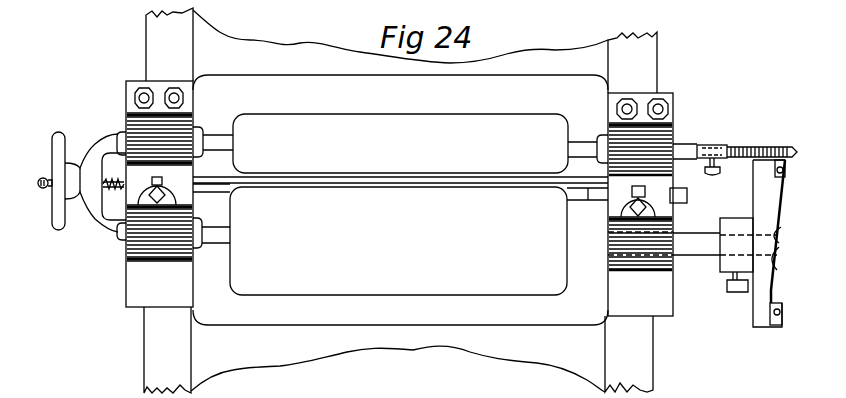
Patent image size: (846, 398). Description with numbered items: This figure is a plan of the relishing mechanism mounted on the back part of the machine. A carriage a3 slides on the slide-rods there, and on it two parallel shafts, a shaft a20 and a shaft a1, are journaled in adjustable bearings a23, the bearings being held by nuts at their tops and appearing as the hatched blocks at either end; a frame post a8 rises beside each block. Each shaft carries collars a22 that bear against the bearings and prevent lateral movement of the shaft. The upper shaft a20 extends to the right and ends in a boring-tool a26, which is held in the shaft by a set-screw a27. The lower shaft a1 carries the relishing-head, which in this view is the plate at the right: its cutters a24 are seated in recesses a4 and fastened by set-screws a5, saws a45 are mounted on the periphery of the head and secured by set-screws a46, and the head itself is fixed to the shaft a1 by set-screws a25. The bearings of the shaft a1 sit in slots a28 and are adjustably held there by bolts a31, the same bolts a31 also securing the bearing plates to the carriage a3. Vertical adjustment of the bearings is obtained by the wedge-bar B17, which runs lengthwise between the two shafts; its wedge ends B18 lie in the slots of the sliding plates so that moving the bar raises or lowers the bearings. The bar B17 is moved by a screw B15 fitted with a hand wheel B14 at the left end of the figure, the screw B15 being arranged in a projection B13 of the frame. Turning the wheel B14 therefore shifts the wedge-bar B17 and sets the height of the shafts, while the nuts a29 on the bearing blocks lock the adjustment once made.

The shaft a1 is at (586, 236).
The carriage a3 is at (399, 201).
The recess a4 is at (775, 283).
The set-screw a5 is at (783, 257).
The frame post a8 is at (656, 80).
The shaft a20 is at (587, 134).
The collar a22 is at (203, 129).
The adjustable bearing a23 is at (126, 118).
The cutter a24 is at (785, 189).
The set-screw a25 is at (728, 290).
The boring-tool a26 is at (760, 144).
The set-screw a27 is at (713, 176).
The slot a28 is at (152, 181).
The nuts a29 is at (672, 111).
The bolt a31 is at (160, 193).
The saw a45 is at (788, 163).
The set-screw a46 is at (787, 170).
The projection B13 is at (108, 239).
The wheel B14 is at (55, 205).
The screw B15 is at (44, 188).
The wedge-bar B17 is at (577, 193).
The wedge end B18 is at (200, 185).